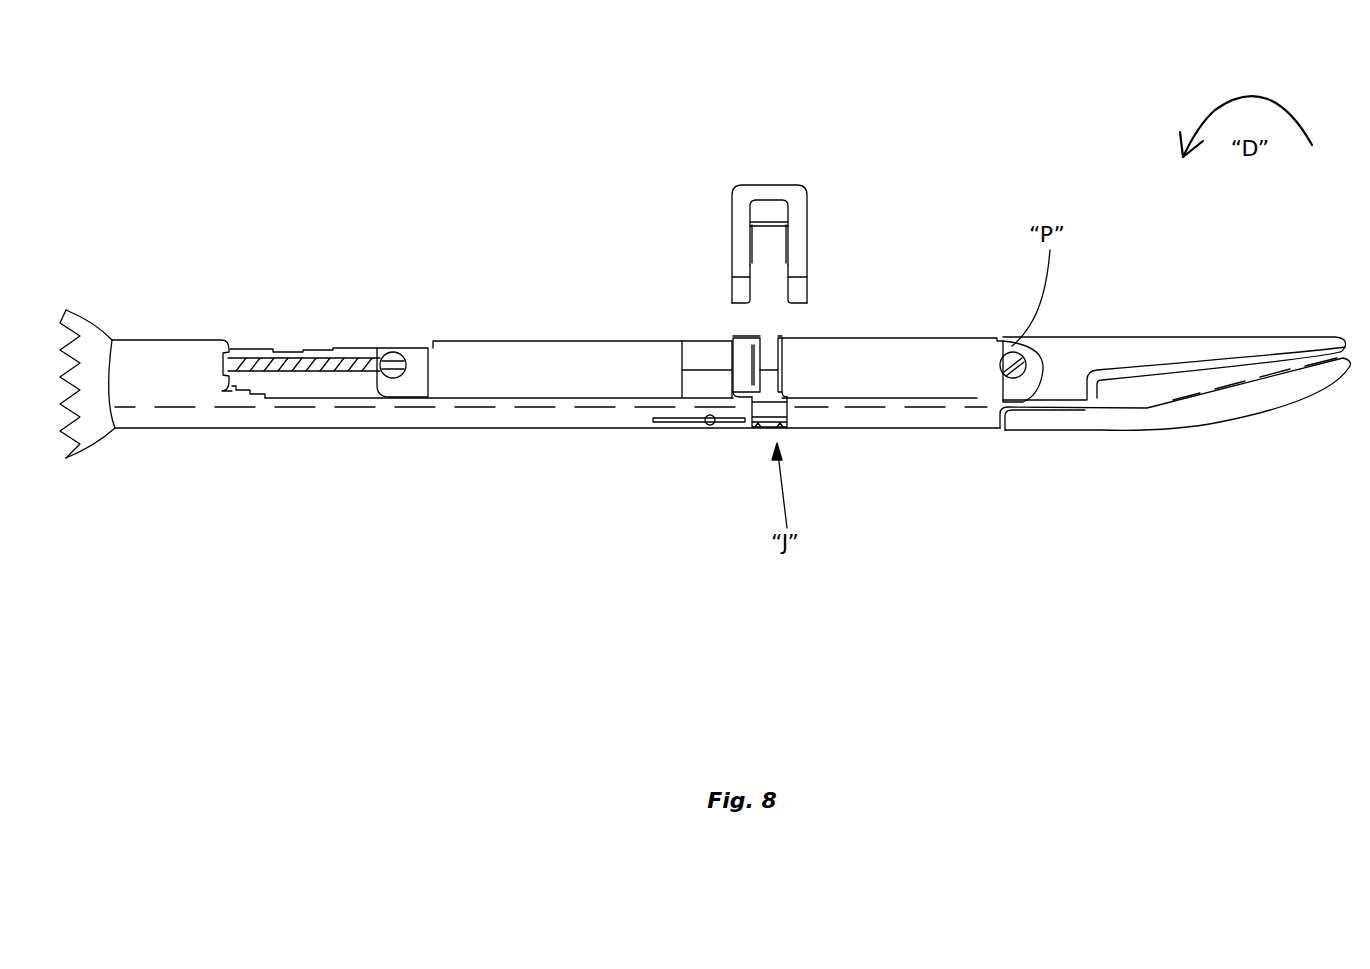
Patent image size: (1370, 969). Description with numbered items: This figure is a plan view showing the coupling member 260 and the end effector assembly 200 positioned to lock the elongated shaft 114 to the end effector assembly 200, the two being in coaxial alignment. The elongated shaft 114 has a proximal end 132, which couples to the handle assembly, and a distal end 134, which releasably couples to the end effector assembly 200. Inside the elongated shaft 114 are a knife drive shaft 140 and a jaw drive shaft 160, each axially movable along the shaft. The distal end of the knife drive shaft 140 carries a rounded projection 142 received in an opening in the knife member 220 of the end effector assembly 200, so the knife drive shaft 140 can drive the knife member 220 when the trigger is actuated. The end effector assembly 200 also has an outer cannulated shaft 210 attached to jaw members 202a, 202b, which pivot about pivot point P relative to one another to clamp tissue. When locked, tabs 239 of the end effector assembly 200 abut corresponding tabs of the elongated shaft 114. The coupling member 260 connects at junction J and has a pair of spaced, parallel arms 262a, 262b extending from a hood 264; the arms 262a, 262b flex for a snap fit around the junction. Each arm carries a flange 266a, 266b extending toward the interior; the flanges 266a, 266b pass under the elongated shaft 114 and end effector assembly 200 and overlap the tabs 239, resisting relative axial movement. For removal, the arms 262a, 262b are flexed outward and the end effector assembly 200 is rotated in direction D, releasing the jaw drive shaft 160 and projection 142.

The elongated shaft 114 is at (432, 525).
The proximal end 132 is at (188, 340).
The distal end 134 is at (733, 428).
The knife drive shaft 140 is at (338, 392).
The rounded projection 142 is at (393, 355).
The jaw drive shaft 160 is at (583, 372).
The end effector assembly 200 is at (1028, 525).
The jaw member 202a is at (1162, 337).
The jaw member 202b is at (1223, 410).
The outer cannulated shaft 210 is at (873, 397).
The knife member 220 is at (412, 385).
The tab 239 is at (783, 380).
The coupling member 260 is at (810, 185).
The arm 262a is at (731, 240).
The arm 262b is at (808, 240).
The hood 264 is at (768, 185).
The flange 266a is at (755, 280).
The flange 266b is at (784, 280).